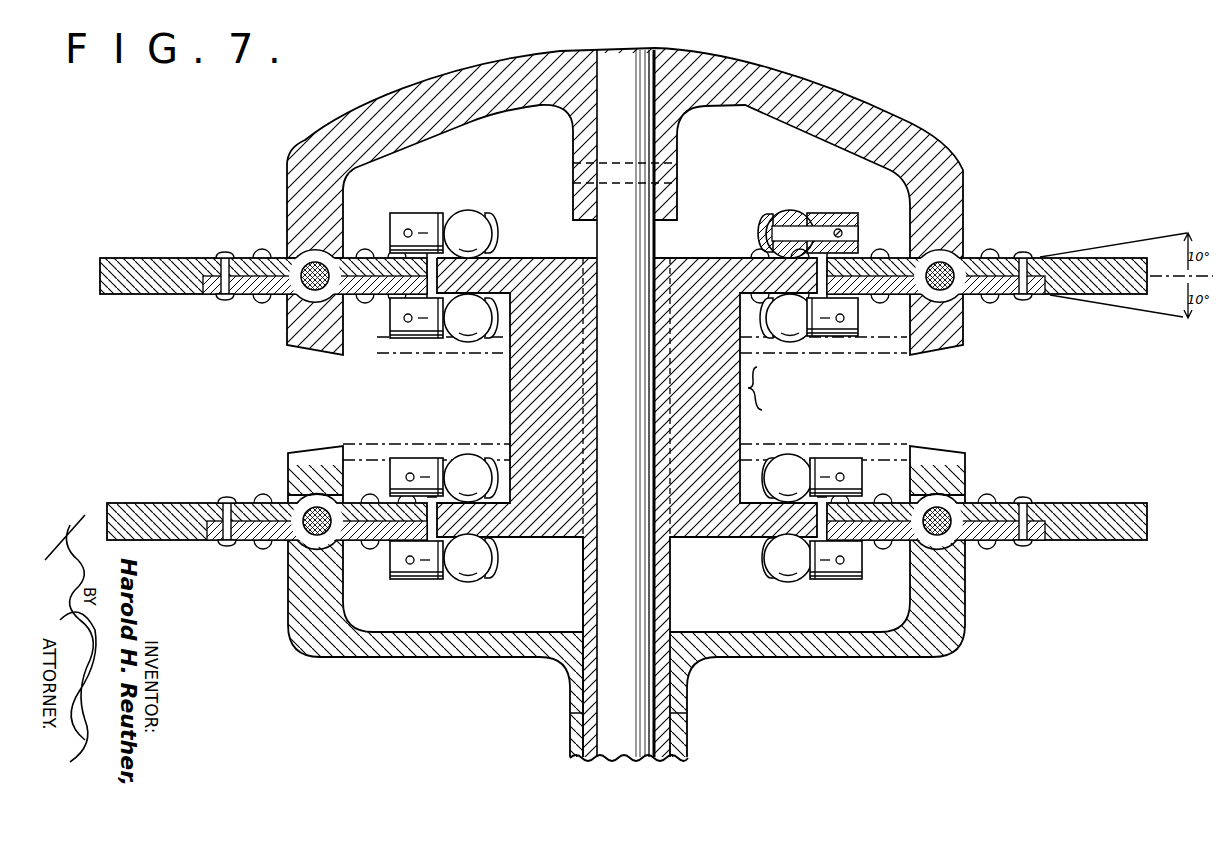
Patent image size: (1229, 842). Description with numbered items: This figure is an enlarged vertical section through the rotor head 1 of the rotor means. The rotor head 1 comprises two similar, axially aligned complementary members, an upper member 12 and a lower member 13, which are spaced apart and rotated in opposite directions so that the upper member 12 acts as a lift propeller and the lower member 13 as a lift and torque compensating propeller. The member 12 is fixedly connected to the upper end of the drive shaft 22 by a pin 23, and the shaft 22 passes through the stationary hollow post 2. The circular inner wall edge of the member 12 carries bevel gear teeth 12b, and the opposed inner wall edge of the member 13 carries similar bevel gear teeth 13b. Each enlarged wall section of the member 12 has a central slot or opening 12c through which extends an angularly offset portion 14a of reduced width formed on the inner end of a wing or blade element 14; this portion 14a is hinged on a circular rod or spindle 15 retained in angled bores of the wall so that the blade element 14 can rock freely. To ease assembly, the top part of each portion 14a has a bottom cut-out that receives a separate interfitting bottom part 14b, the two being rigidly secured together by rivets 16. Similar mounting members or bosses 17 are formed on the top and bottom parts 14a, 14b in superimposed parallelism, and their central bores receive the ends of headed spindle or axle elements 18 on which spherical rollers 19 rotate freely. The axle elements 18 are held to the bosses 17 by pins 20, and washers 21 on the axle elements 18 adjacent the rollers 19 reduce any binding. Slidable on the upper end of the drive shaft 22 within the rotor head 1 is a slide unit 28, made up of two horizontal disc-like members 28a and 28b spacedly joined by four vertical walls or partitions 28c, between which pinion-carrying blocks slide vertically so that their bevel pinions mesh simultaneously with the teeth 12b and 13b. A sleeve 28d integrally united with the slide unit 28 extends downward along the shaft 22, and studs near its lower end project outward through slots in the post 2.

The rotor head 1 is at (995, 68).
The stationary hollow post 2 is at (687, 742).
The upper segmental member 12 is at (870, 122).
The bevel gear teeth 12b is at (933, 343).
The central slot or opening 12c is at (287, 248).
The lower segmental member 13 is at (858, 660).
The bevel gear teeth 13b is at (947, 457).
The wing, plane, or blade element 14 is at (133, 283).
The angularly offset portion 14a is at (350, 256).
The bottom part 14b is at (243, 297).
The circular rod or spindle 15 is at (287, 303).
The rivet 16 is at (223, 253).
The mounting member or boss 17 is at (433, 213).
The headed spindle or axle element 18 is at (498, 233).
The spherical roller 19 is at (472, 222).
The pin 20 is at (835, 228).
The washer 21 is at (808, 222).
The drive shaft 22 is at (612, 690).
The pin 23 is at (672, 176).
The slide unit 28 is at (627, 507).
The upper disc-like member 28a is at (760, 262).
The lower disc-like member 28b is at (760, 540).
The vertically extending wall or partition 28c is at (530, 368).
The sleeve 28d is at (663, 690).